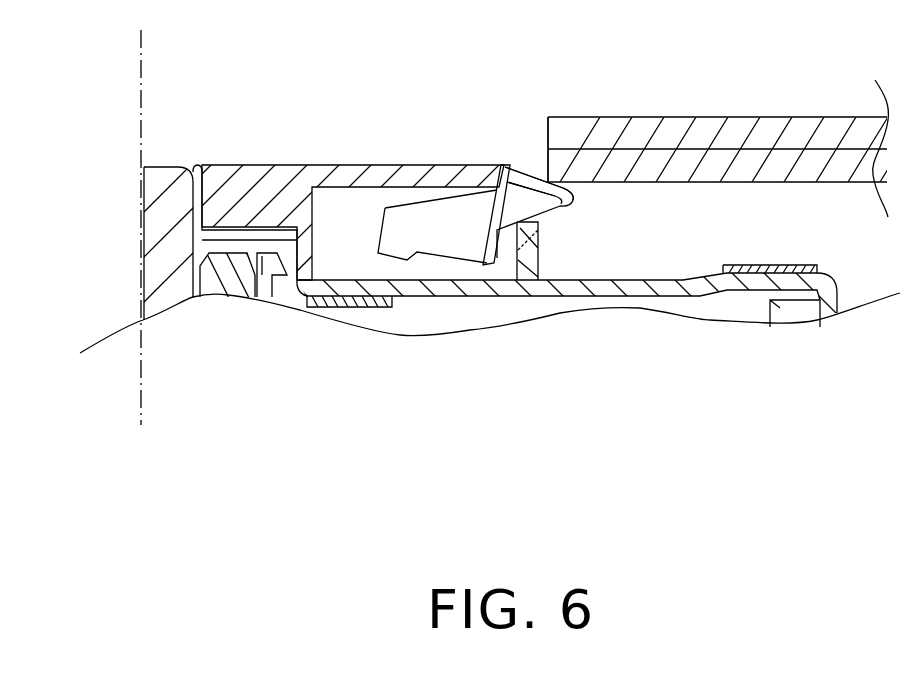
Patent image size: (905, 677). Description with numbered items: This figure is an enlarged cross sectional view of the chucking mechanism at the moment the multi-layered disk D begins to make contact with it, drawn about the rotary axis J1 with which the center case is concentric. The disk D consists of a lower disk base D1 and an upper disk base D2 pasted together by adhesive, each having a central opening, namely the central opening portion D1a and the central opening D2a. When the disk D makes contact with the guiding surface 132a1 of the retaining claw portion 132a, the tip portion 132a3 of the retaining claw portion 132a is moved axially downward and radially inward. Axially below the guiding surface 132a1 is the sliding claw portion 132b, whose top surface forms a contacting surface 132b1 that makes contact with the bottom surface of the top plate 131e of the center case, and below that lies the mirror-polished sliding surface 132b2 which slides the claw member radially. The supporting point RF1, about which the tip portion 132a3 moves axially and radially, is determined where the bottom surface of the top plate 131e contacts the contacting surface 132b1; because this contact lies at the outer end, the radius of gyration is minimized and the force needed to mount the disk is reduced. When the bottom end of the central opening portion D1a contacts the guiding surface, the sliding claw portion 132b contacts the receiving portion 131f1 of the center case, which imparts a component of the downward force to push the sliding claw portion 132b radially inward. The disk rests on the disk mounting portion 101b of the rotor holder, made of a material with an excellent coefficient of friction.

The rotary axis J1 is at (143, 100).
The top plate 131e is at (374, 178).
The guiding surface 132a1 is at (520, 163).
The supporting point RF1 is at (537, 194).
The central opening portion D1a is at (548, 157).
The central opening D2a is at (548, 133).
The contacting surface 132b1 is at (577, 175).
The disk D is at (708, 103).
The upper disk base D2 is at (757, 132).
The lower disk base D1 is at (778, 173).
The tip portion 132a3 is at (567, 194).
The retaining claw portion 132a is at (545, 217).
The disk mounting portion 101b is at (783, 268).
The sliding claw portion 132b is at (512, 208).
The sliding surface 132b2 is at (507, 235).
The receiving portion 131f1 is at (540, 222).